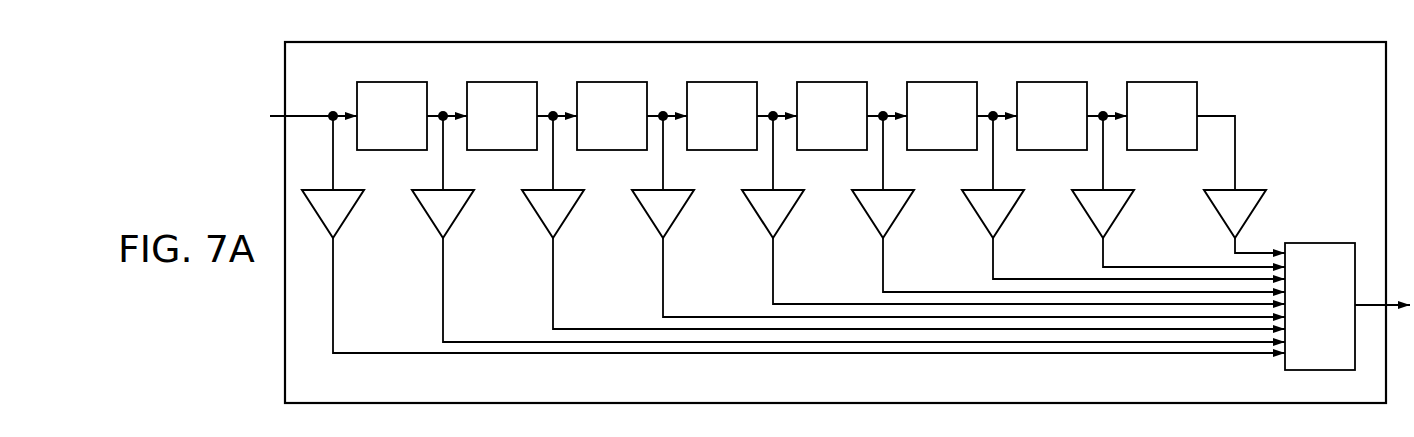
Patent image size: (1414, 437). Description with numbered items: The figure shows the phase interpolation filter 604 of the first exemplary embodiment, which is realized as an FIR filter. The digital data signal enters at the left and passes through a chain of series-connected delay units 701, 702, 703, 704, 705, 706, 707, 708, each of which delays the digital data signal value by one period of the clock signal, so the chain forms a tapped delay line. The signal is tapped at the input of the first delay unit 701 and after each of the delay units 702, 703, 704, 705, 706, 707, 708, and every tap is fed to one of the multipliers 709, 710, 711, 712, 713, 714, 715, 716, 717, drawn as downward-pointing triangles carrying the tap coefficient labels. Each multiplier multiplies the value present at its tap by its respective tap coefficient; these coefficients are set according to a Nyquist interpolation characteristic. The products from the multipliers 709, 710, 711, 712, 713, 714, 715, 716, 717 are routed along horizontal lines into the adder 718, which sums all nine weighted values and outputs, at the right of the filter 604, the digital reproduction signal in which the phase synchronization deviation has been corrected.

The phase interpolation filter 604 is at (1217, 42).
The delay unit 701 is at (397, 82).
The delay unit 702 is at (507, 82).
The delay unit 703 is at (617, 82).
The delay unit 704 is at (727, 82).
The delay unit 705 is at (837, 82).
The delay unit 706 is at (947, 82).
The delay unit 707 is at (1057, 82).
The delay unit 708 is at (1167, 82).
The multiplier 709 is at (345, 190).
The multiplier 710 is at (455, 190).
The multiplier 711 is at (565, 190).
The multiplier 712 is at (675, 190).
The multiplier 713 is at (785, 190).
The multiplier 714 is at (895, 190).
The multiplier 715 is at (1005, 190).
The multiplier 716 is at (1115, 190).
The multiplier 717 is at (1265, 190).
The adder 718 is at (1320, 243).